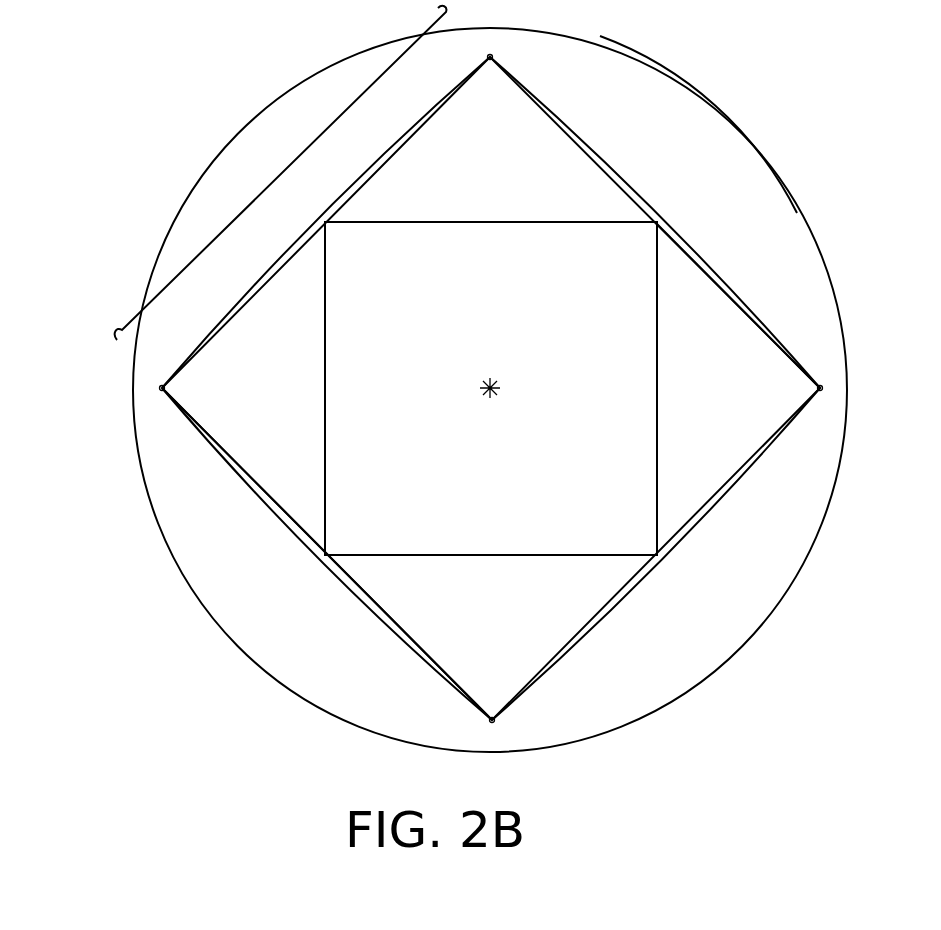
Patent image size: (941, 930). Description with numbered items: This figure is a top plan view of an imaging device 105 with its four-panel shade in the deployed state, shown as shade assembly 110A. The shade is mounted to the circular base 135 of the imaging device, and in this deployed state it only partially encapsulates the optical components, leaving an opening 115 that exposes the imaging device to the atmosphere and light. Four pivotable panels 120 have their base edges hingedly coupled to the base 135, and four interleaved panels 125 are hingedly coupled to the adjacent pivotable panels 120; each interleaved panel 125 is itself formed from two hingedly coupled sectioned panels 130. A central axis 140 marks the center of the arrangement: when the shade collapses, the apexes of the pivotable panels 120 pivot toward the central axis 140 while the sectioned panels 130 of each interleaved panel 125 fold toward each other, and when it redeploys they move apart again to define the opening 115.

The imaging device 105 is at (175, 79).
The shade assembly in deployed state 110A is at (200, 455).
The opening 115 is at (773, 339).
The pivotable panel 120 is at (485, 223).
The interleaved panel 125 is at (277, 166).
The sectioned panel 130 is at (384, 163).
The base 135 is at (797, 213).
The central axis 140 is at (496, 392).